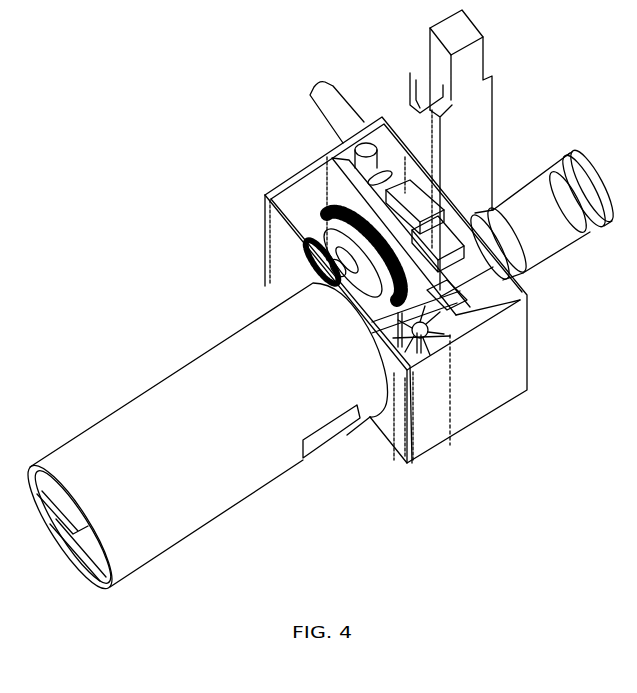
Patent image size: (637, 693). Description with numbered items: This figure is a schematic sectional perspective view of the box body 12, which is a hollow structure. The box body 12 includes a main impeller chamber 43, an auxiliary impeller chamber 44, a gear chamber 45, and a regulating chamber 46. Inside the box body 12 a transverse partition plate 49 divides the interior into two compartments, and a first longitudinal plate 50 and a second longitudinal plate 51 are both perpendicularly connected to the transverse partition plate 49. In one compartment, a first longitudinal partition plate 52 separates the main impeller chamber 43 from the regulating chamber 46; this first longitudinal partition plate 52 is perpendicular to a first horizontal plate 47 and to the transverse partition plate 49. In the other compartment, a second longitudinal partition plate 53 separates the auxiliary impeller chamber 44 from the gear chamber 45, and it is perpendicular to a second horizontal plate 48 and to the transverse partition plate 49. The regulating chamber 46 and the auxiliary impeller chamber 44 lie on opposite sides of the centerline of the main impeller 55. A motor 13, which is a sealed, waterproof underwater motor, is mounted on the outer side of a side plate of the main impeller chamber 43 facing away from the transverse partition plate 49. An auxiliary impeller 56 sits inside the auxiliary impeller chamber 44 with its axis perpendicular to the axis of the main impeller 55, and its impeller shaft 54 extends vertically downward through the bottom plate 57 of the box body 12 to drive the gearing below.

The box body 12 is at (185, 133).
The motor 13 is at (570, 228).
The main impeller chamber 43 is at (335, 215).
The auxiliary impeller chamber 44 is at (390, 328).
The gear chamber 45 is at (297, 207).
The regulating chamber 46 is at (325, 157).
The first horizontal plate 47 is at (460, 193).
The second horizontal plate 48 is at (394, 440).
The transverse partition plate 49 is at (470, 318).
The first longitudinal plate 50 is at (368, 125).
The second longitudinal plate 51 is at (465, 343).
The first longitudinal partition plate 52 is at (400, 158).
The second longitudinal partition plate 53 is at (470, 340).
The impeller shaft 54 is at (425, 340).
The main impeller 55 is at (478, 295).
The auxiliary impeller 56 is at (410, 413).
The bottom plate 57 is at (380, 432).